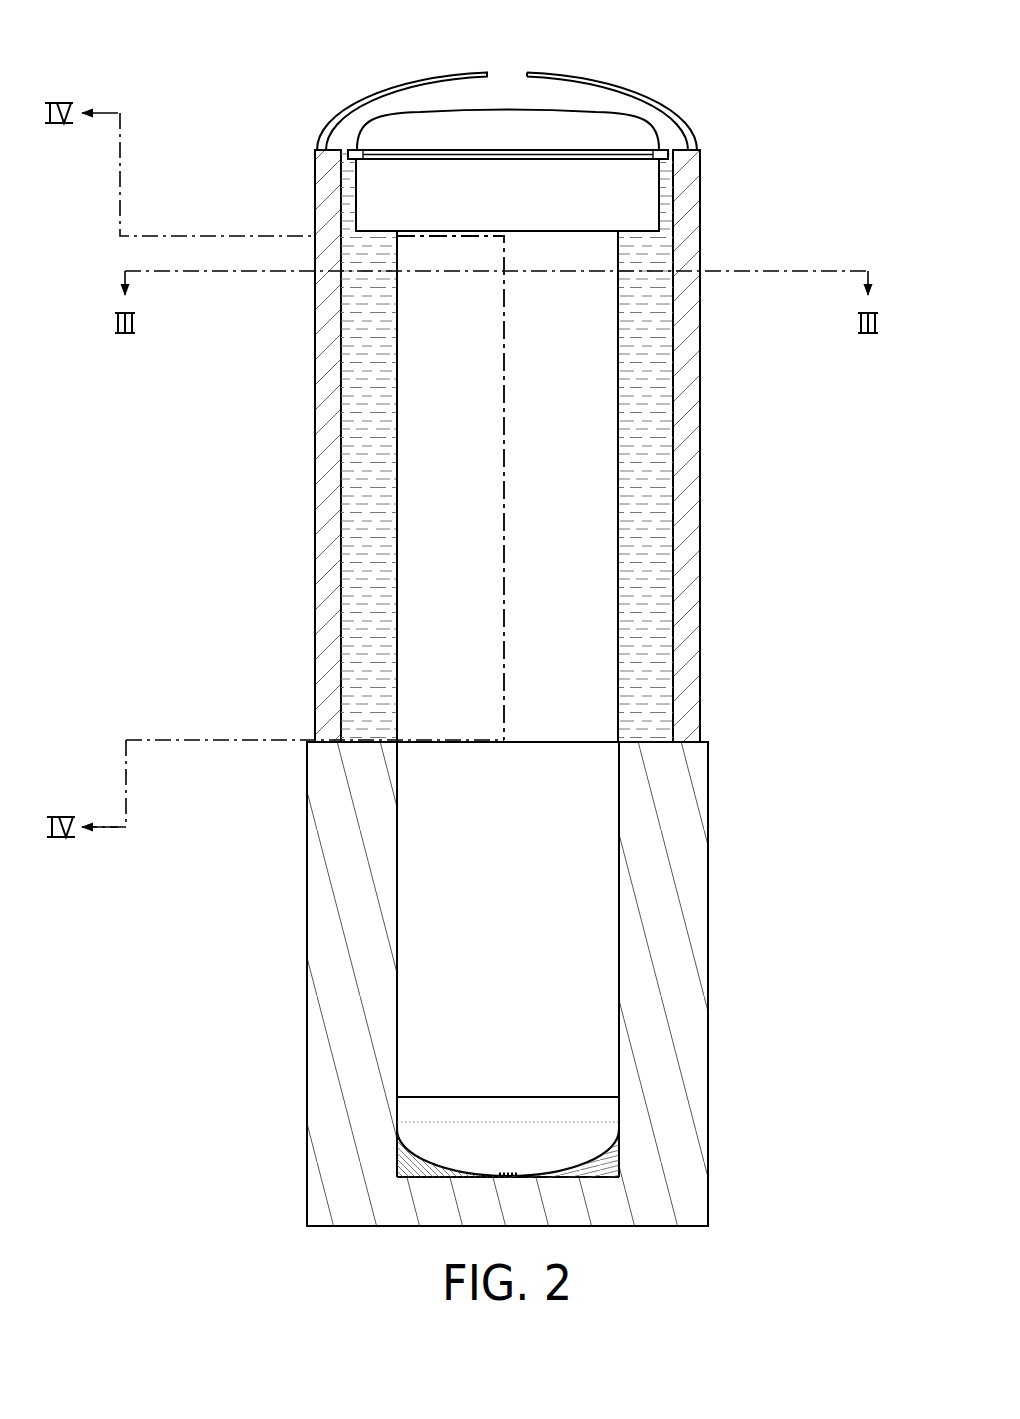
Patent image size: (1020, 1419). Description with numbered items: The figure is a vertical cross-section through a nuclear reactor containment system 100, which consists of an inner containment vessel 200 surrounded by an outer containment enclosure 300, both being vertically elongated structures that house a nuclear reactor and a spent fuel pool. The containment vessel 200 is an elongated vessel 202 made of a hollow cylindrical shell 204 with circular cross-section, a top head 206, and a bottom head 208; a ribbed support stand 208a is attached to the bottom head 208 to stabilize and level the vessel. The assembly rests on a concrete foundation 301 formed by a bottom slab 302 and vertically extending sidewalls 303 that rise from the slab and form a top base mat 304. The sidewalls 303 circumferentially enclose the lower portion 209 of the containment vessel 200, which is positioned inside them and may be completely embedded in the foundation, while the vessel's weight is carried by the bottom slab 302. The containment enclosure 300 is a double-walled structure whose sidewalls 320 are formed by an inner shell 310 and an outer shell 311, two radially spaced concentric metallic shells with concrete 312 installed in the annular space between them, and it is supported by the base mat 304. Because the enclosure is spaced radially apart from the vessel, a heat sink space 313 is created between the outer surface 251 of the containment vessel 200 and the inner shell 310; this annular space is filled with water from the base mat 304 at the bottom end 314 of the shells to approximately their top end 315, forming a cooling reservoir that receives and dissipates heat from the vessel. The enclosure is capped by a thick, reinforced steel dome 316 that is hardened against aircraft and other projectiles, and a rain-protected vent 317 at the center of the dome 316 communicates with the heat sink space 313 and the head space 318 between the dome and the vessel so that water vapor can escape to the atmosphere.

The nuclear reactor containment system 100 is at (235, 88).
The containment vessel 200 is at (393, 518).
The elongated vessel 202 is at (587, 598).
The cylindrical shell 204 is at (397, 254).
The top head 206 is at (585, 100).
The bottom head 208 is at (566, 1139).
The ribbed support stand 208a is at (416, 1175).
The lower portion 209 is at (393, 906).
The outer surface 251 is at (620, 495).
The containment enclosure 300 is at (284, 322).
The concrete foundation 301 is at (340, 992).
The bottom slab 302 is at (566, 1205).
The sidewalls 303 is at (663, 837).
The top base mat 304 is at (353, 740).
The inner shell 310 is at (672, 622).
The outer shell 311 is at (315, 437).
The concrete 312 is at (332, 388).
The heat sink space 313 is at (365, 555).
The bottom end 314 is at (325, 748).
The top end 315 is at (329, 154).
The steel dome 316 is at (393, 85).
The rain-protected vent 317 is at (530, 62).
The head space 318 is at (618, 123).
The sidewalls 320 is at (313, 487).